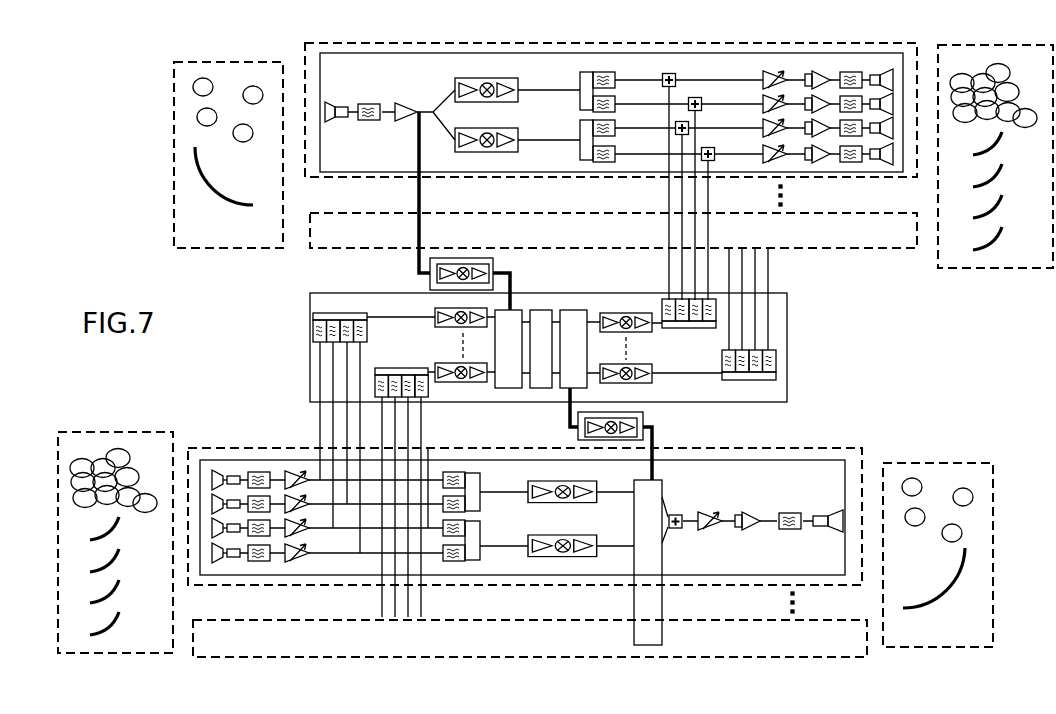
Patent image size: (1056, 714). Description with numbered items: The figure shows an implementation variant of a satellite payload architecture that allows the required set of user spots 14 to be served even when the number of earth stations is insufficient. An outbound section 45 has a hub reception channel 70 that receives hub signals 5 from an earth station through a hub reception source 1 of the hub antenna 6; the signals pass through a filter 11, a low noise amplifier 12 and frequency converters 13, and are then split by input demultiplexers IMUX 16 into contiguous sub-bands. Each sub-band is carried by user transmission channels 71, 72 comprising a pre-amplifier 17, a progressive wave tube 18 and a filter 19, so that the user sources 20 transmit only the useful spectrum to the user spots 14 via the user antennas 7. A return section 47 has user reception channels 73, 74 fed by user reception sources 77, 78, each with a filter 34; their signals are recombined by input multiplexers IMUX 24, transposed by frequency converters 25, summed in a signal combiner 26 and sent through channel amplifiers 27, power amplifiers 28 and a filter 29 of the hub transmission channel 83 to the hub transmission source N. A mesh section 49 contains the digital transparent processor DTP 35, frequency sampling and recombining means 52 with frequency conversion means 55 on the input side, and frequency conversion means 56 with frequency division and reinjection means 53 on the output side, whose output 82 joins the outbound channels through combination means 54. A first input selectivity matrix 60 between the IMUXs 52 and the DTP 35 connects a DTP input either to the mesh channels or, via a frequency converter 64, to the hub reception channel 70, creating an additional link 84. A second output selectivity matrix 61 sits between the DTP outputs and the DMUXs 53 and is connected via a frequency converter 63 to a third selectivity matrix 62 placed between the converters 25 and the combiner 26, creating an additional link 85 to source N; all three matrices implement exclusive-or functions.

The hub reception source 1 is at (332, 102).
The hub signals 5 is at (253, 102).
The hub transmission and reception antenna 6 is at (216, 185).
The user transmission and reception antennas 7 is at (1003, 232).
The filter 11 is at (373, 103).
The low noise amplifier 12 is at (405, 118).
The frequency converters 13 is at (500, 134).
The user spots 14 is at (1004, 75).
The input demultiplexers IMUX 16 is at (580, 140).
The pre-amplifier 17 is at (783, 147).
The progressive wave tube 18 is at (816, 154).
The filter 19 is at (852, 154).
The user sources 20 is at (891, 154).
The input multiplexers IMUX 24 is at (480, 533).
The frequency converters 25 is at (552, 535).
The signal combiner 26 is at (680, 515).
The channel amplifiers 27 is at (708, 531).
The power amplifiers 28 is at (748, 531).
The filter 29 is at (792, 530).
The filter 34 is at (256, 472).
The digital transparent processor DTP 35 is at (541, 310).
The outbound section 45 is at (310, 43).
The return section 47 is at (805, 448).
The mesh section 49 is at (787, 313).
The frequency sampling and recombining means 52 is at (333, 313).
The frequency division and reinjection means 53 is at (713, 329).
The combination means 54 is at (668, 73).
The frequency conversion means 55 is at (440, 363).
The frequency conversion means 56 is at (650, 364).
The first input selectivity matrix 60 is at (510, 388).
The second output selectivity matrix 61 is at (571, 320).
The third selectivity matrix 62 is at (662, 607).
The frequency converter 63 is at (577, 429).
The frequency converter 64 is at (430, 283).
The hub reception channel 70 is at (397, 103).
The user transmission channel 71 is at (742, 78).
The user transmission channel 72 is at (731, 128).
The user reception channel 73 is at (309, 476).
The user reception channel 74 is at (428, 448).
The user reception source 77 is at (231, 500).
The user reception source 78 is at (216, 557).
The output 82 is at (681, 196).
The hub transmission channel 83 is at (779, 513).
The additional link 84 is at (418, 188).
The additional link 85 is at (656, 444).
The hub transmission source N is at (832, 516).